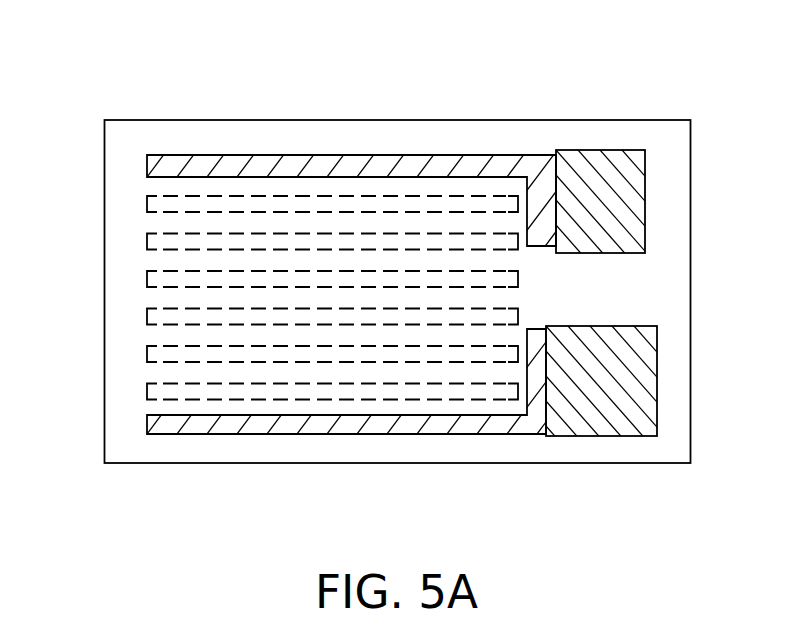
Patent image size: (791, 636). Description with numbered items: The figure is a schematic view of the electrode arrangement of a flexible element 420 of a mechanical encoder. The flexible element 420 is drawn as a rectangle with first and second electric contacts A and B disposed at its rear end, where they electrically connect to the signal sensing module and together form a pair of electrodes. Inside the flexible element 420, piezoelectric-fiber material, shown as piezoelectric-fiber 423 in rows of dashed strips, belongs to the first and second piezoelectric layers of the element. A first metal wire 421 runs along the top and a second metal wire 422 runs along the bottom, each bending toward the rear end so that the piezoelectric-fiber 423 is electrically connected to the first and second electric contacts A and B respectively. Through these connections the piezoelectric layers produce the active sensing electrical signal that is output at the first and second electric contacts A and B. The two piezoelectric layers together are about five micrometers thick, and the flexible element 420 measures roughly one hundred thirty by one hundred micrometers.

The flexible element 420 is at (348, 95).
The first metal wire 421 is at (210, 167).
The second metal wire 422 is at (210, 427).
The piezoelectric-fiber 423 is at (147, 204).
The first electric contact A is at (606, 422).
The second electric contact B is at (606, 180).